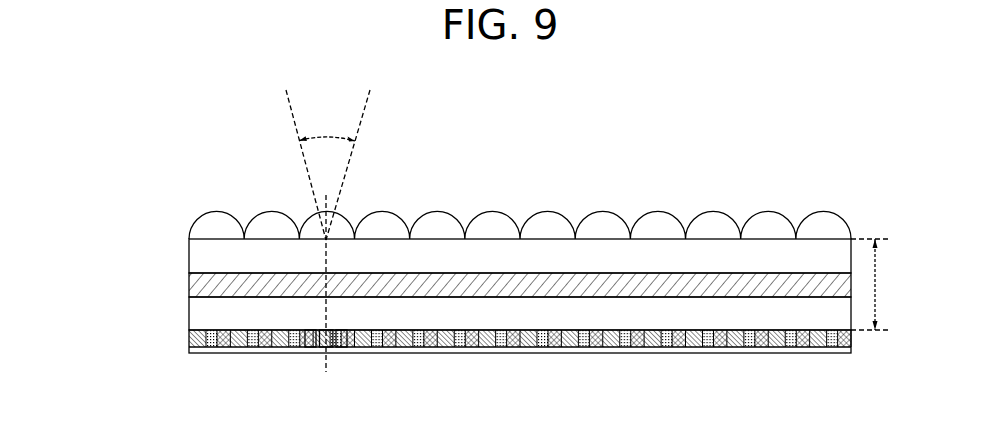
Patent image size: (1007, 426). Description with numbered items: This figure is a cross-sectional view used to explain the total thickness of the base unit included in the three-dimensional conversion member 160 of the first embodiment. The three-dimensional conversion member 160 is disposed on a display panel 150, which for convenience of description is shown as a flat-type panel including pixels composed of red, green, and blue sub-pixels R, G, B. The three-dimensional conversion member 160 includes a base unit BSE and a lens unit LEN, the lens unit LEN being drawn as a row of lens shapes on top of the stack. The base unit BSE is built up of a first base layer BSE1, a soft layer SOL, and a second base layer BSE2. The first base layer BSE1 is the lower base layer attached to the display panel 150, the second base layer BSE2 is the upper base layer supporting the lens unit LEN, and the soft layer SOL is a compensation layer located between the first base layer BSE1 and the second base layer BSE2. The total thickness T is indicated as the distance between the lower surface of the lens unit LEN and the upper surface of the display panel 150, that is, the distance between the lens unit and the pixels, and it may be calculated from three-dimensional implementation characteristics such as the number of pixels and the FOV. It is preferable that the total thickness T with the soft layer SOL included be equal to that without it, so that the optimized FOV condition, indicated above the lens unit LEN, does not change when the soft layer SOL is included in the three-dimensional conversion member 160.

The 3D conversion member 160 is at (100, 213).
The lens unit LEN is at (192, 226).
The second base layer BSE2 is at (189, 258).
The soft layer SOL is at (189, 285).
The first base layer BSE1 is at (189, 313).
The base unit BSE is at (531, 284).
The total thickness T is at (871, 284).
The display panel 150 is at (189, 343).
The element FOV is at (328, 231).
The red sub-pixel R is at (326, 240).
The green sub-pixel G is at (328, 364).
The blue sub-pixel B is at (326, 240).